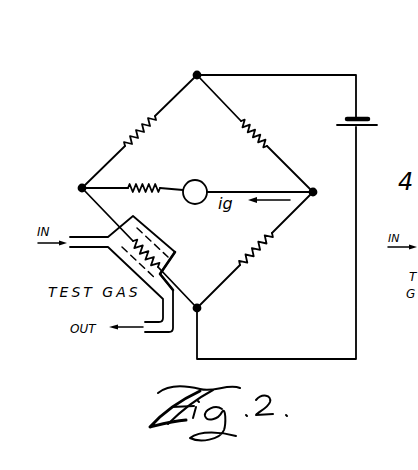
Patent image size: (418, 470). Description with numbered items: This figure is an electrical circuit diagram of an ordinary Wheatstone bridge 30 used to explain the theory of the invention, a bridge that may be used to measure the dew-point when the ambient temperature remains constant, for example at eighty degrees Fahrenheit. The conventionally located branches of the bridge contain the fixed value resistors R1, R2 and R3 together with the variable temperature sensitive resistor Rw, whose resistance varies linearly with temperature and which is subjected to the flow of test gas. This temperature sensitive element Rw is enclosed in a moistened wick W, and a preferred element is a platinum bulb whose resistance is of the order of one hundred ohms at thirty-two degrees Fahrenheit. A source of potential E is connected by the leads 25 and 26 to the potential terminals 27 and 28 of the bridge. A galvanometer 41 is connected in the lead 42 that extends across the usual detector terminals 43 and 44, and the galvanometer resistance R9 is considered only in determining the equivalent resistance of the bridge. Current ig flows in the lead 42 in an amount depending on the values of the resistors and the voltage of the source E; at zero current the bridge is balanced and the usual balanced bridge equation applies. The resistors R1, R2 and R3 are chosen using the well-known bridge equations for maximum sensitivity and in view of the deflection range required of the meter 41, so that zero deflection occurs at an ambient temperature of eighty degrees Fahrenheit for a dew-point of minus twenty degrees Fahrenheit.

The lead 25 is at (328, 64).
The lead 26 is at (315, 359).
The potential terminal 27 is at (204, 61).
The potential terminal 28 is at (201, 311).
The Wheatstone bridge 30 is at (194, 143).
The galvanometer 41 is at (208, 188).
The lead 42 is at (176, 183).
The detector terminal 43 is at (66, 186).
The detector terminal 44 is at (327, 183).
The fixed value resistor R1 is at (263, 135).
The fixed value resistor R2 is at (128, 137).
The fixed value resistor R3 is at (265, 254).
The galvanometer resistance R9 is at (157, 187).
The temperature sensitive resistor Rw is at (156, 244).
The moistened wick W is at (163, 253).
The source of potential E is at (369, 120).